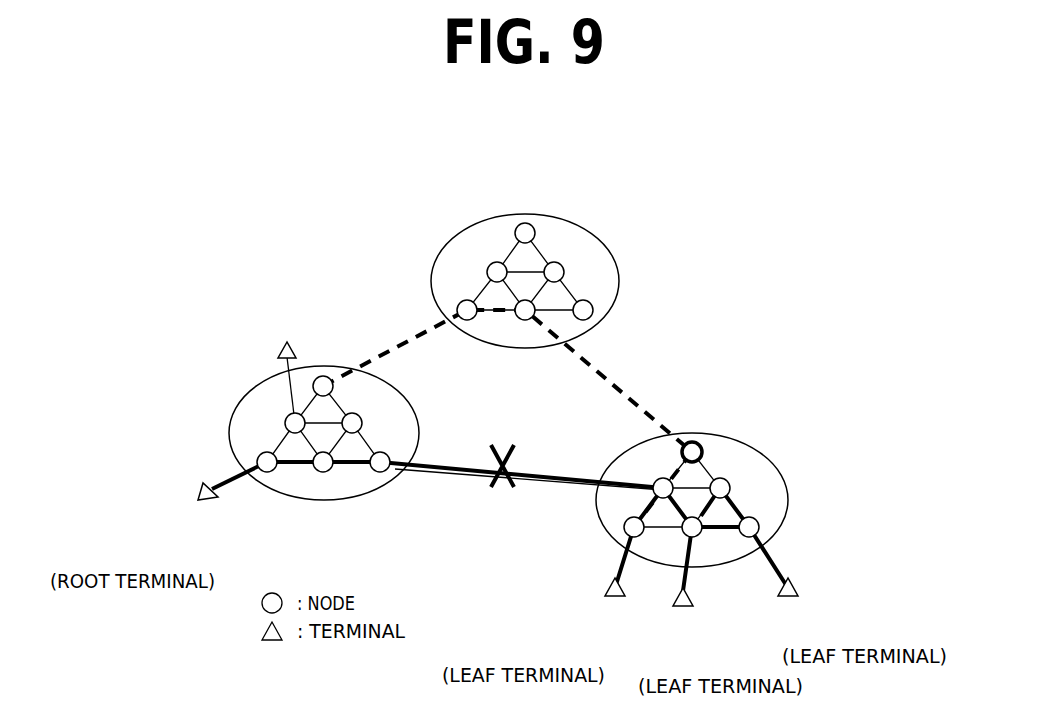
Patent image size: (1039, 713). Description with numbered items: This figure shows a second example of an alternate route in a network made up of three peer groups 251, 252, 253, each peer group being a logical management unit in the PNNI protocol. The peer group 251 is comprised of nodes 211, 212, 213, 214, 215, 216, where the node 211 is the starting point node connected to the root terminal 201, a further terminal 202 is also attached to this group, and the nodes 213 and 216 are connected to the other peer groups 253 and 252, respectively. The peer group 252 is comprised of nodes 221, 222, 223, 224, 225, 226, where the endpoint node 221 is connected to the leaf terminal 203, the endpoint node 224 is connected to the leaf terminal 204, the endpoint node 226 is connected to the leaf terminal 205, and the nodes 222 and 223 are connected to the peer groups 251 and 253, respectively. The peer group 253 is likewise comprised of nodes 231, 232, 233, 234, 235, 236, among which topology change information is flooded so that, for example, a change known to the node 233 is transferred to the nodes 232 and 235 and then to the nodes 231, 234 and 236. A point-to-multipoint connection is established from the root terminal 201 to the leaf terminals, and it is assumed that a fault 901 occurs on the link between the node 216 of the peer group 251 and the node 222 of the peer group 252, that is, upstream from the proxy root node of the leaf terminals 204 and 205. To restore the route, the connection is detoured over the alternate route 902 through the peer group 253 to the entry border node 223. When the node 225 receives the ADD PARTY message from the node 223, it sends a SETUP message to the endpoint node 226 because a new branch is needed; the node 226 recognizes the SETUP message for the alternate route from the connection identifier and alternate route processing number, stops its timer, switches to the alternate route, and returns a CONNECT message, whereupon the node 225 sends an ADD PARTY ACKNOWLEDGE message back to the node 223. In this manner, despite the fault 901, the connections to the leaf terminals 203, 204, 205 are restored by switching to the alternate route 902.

The root terminal 201 is at (210, 500).
The terminal 202 is at (287, 342).
The leaf terminal 203 is at (612, 598).
The leaf terminal 204 is at (680, 608).
The leaf terminal 205 is at (785, 598).
The node 211 is at (258, 455).
The node 212 is at (293, 412).
The node 213 is at (325, 376).
The node 214 is at (323, 472).
The node 215 is at (360, 414).
The node 216 is at (388, 455).
The node 221 is at (623, 526).
The node 222 is at (655, 480).
The node 223 is at (694, 442).
The node 224 is at (696, 538).
The node 225 is at (727, 479).
The node 226 is at (757, 535).
The node 231 is at (460, 301).
The node 232 is at (489, 264).
The node 233 is at (534, 226).
The node 234 is at (523, 321).
The node 235 is at (562, 264).
The node 236 is at (591, 302).
The peer group 251 is at (343, 503).
The peer group 252 is at (792, 498).
The peer group 253 is at (497, 212).
The fault 901 is at (501, 490).
The alternate route 902 is at (603, 371).